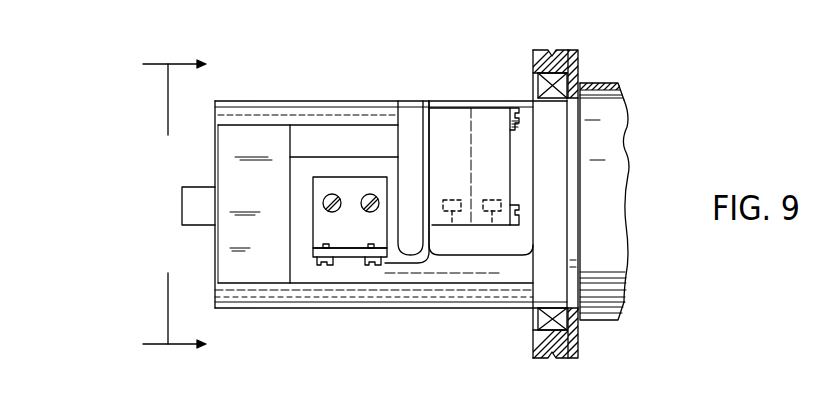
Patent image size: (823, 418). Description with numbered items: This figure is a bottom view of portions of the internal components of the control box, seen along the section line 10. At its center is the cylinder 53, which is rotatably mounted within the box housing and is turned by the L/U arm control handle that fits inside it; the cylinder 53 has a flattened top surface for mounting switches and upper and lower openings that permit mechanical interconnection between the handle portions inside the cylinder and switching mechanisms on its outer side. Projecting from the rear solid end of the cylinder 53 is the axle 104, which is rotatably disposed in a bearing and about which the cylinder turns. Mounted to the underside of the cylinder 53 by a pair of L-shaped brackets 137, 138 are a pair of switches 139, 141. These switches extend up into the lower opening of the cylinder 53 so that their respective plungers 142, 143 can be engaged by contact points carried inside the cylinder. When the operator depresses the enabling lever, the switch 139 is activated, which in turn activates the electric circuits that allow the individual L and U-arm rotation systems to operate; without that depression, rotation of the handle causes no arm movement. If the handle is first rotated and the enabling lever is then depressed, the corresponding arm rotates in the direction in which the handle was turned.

The section line 10- 10 is at (158, 206).
The cylinder 53 is at (305, 127).
The axle 104 is at (182, 204).
The L-shaped bracket 137 is at (327, 227).
The L-shaped bracket 138 is at (360, 258).
The switch 139 is at (443, 117).
The switch 141 is at (492, 112).
The plunger 142 is at (452, 225).
The plunger 143 is at (492, 225).